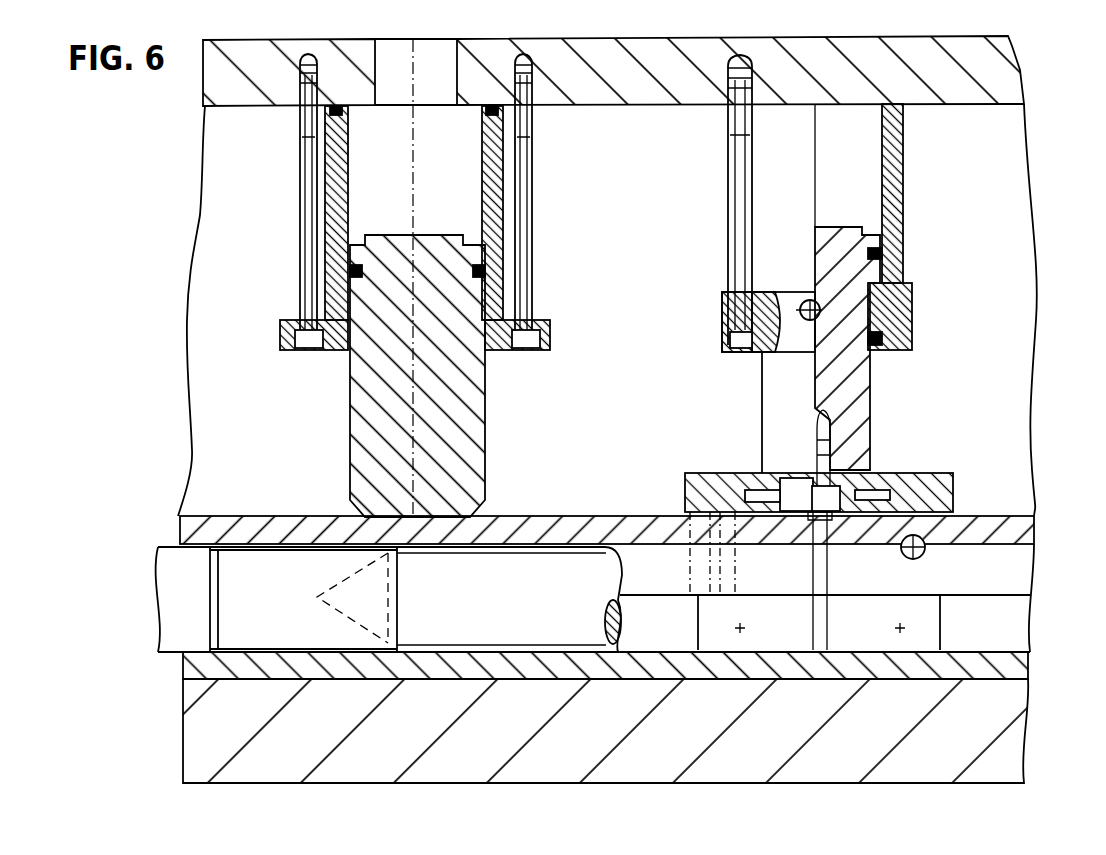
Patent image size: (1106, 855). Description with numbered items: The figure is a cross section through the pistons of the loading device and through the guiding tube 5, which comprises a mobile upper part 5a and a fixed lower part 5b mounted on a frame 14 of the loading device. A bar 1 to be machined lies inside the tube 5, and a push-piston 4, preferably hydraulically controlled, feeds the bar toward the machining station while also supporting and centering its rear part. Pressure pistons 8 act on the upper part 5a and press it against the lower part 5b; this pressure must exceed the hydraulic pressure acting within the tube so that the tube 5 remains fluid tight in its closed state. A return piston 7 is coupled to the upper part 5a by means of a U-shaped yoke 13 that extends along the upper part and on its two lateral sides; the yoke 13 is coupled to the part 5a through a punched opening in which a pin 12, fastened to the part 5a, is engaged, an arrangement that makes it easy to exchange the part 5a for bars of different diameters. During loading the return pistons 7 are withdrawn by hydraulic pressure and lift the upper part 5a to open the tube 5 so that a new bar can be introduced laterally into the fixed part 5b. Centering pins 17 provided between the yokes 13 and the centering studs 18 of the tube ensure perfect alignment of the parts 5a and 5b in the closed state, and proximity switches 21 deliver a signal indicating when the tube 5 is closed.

The bar 1 is at (537, 575).
The push-piston 4 is at (237, 570).
The guiding tube 5 is at (1015, 616).
The upper part of the tube 5a is at (317, 532).
The lower part of the tube 5b is at (205, 686).
The return piston 7 is at (862, 376).
The pressure piston 8 is at (365, 392).
The pin 12 is at (923, 550).
The U-shaped yoke 13 is at (942, 448).
The frame 14 is at (1005, 722).
The centering pin 17 is at (802, 580).
The centering stud 18 is at (942, 628).
The proximity switch 21 is at (686, 530).